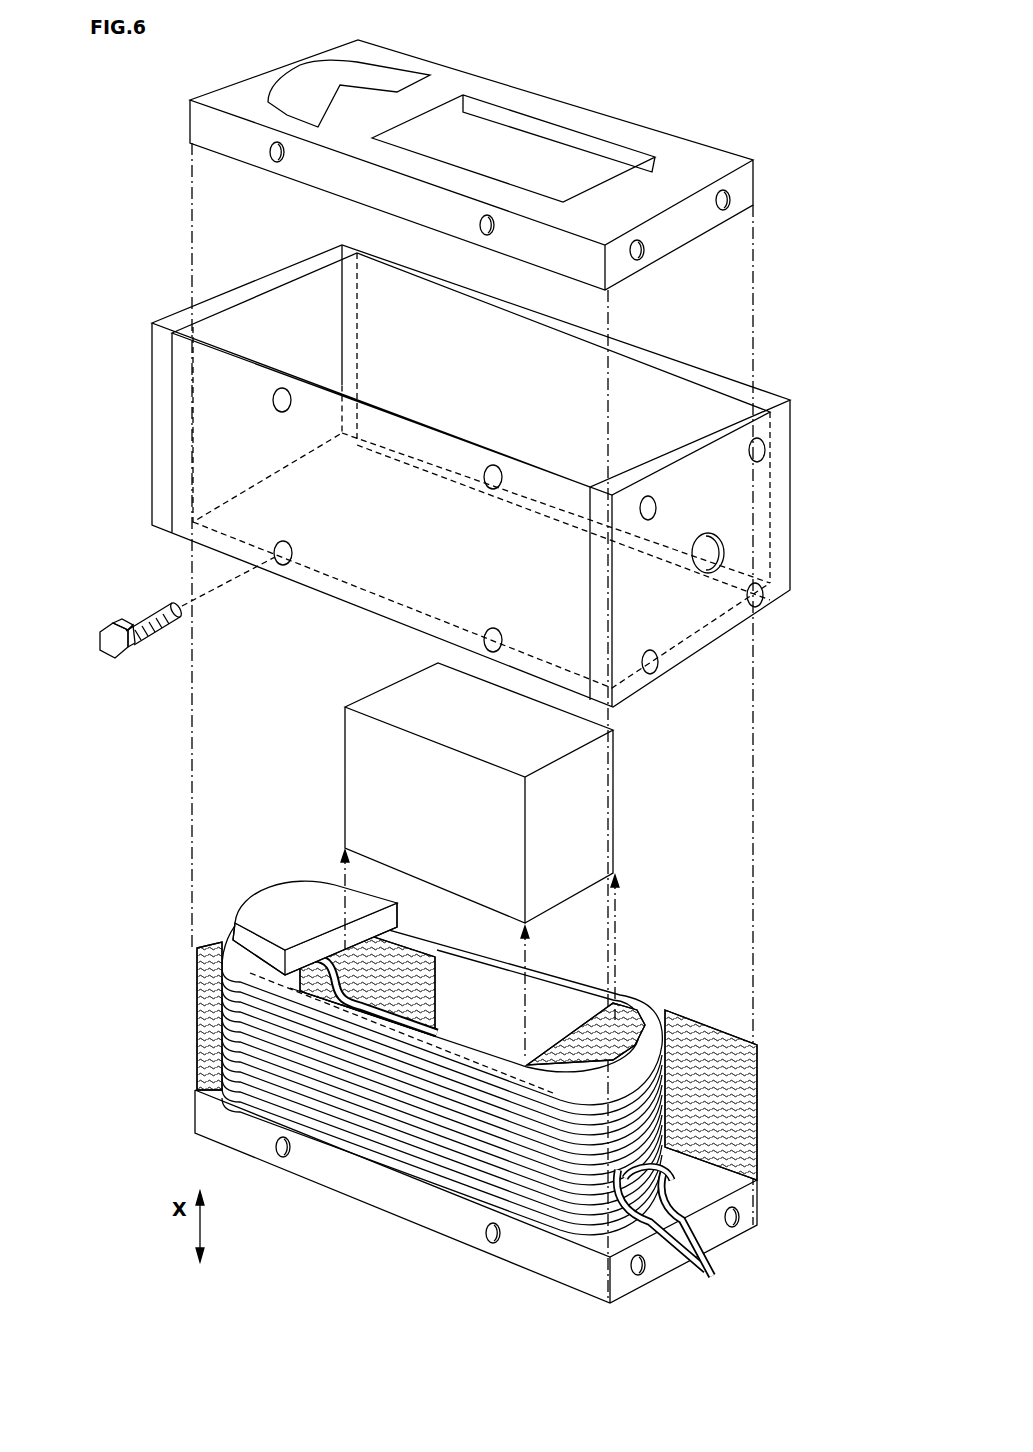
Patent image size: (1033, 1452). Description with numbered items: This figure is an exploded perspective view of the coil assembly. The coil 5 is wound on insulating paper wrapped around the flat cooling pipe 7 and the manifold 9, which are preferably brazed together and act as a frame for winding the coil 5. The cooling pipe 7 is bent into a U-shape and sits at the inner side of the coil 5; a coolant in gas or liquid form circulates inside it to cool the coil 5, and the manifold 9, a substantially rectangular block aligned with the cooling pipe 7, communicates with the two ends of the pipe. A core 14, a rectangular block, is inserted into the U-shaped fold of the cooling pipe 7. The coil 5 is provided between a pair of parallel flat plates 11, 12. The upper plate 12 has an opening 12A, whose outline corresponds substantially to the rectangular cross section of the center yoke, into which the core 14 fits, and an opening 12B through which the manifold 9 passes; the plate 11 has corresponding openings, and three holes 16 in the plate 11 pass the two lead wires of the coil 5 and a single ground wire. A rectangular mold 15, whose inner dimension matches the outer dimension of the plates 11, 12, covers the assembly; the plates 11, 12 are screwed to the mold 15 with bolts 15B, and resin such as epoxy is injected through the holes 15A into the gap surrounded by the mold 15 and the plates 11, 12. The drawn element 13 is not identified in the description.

The coil 5 is at (247, 1102).
The flat cooling pipe 7 is at (437, 1030).
The manifold 9 is at (300, 890).
The plate 11 is at (427, 1227).
The plate 12 is at (495, 165).
The opening 12A is at (610, 157).
The opening 12B is at (393, 73).
The insulating member 13 is at (433, 977).
The core 14 is at (610, 815).
The rectangular mold 15 is at (474, 476).
The holes 15A is at (725, 552).
The bolts 15B is at (147, 603).
The holes 16 is at (700, 1262).